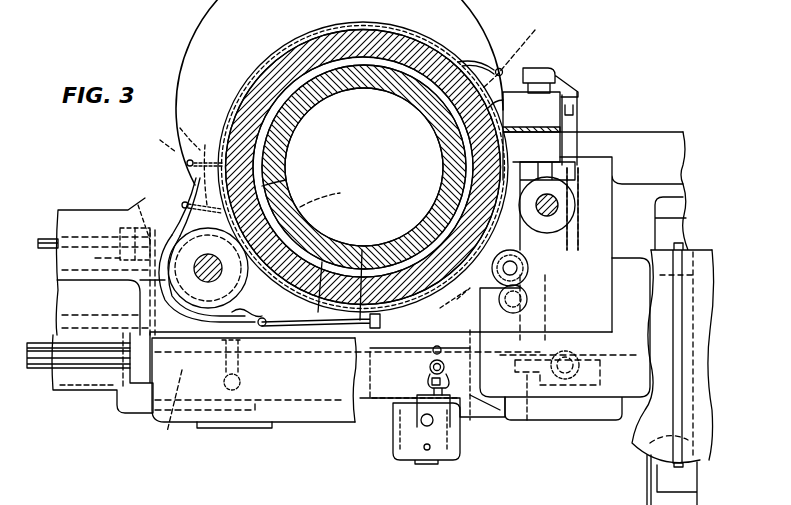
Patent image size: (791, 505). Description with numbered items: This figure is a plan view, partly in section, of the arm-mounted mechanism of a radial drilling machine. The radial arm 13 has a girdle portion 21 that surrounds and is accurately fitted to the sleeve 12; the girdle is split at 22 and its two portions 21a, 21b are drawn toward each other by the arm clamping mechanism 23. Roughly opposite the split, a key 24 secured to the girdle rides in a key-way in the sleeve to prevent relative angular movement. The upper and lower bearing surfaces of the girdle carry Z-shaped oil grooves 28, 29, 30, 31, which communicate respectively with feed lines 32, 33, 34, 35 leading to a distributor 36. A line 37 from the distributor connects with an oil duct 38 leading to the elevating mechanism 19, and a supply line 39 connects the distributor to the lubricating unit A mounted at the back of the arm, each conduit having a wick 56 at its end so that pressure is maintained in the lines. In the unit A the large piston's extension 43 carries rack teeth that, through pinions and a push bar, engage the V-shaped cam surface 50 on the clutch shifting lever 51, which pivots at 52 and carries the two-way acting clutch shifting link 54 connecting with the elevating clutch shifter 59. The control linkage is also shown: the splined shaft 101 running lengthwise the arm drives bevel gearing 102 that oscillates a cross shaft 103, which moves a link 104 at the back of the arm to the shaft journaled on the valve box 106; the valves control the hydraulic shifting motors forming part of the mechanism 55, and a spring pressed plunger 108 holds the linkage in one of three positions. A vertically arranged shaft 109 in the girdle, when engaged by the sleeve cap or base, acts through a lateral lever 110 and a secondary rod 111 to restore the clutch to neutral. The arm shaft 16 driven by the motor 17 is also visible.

The girdle portion 21 is at (258, 55).
The girdle portion half 21a is at (548, 105).
The girdle portion half 21b is at (548, 143).
The split 22 is at (562, 130).
The arm clamping mechanism 23 is at (566, 86).
The Z-shaped oil groove 30 is at (490, 90).
The feed line 34 is at (498, 66).
The wick 56 is at (517, 47).
The Z-shaped oil groove 29 is at (296, 143).
The sleeve member 12 is at (470, 194).
The Z-shaped oil groove 31 is at (482, 168).
The key 24 is at (264, 188).
The Z-shaped oil groove 28 is at (328, 192).
The feed line 35 is at (320, 262).
The supply line 39 is at (362, 252).
The feed line 33 is at (190, 150).
The feed line 32 is at (188, 160).
The bevel gearing 102 is at (140, 205).
The splined shaft 101 is at (48, 238).
The cross shaft 103 is at (150, 300).
The arm shaft 16 is at (44, 343).
The radial arm 13 is at (76, 392).
The elevating mechanism 19 is at (212, 260).
The oil duct 38 is at (204, 282).
The line 37 is at (232, 312).
The distributor 36 is at (262, 338).
The elevating clutch shifter 59 is at (222, 372).
The clutch shifting link 54 is at (354, 365).
The link 104 is at (172, 410).
The lubricating unit A is at (388, 448).
The extension 43 is at (420, 425).
The pivot 52 is at (430, 370).
The V-shaped cam surface 50 is at (447, 386).
The clutch shifting lever 51 is at (440, 352).
The elevating clutch shifting mechanism 55 is at (472, 400).
The spring pressed plunger 108 is at (539, 413).
The valve box 106 is at (606, 360).
The vertically arranged shaft 109 is at (556, 252).
The lateral lever 110 is at (530, 282).
The secondary rod 111 is at (545, 296).
The drive motor 17 is at (640, 440).